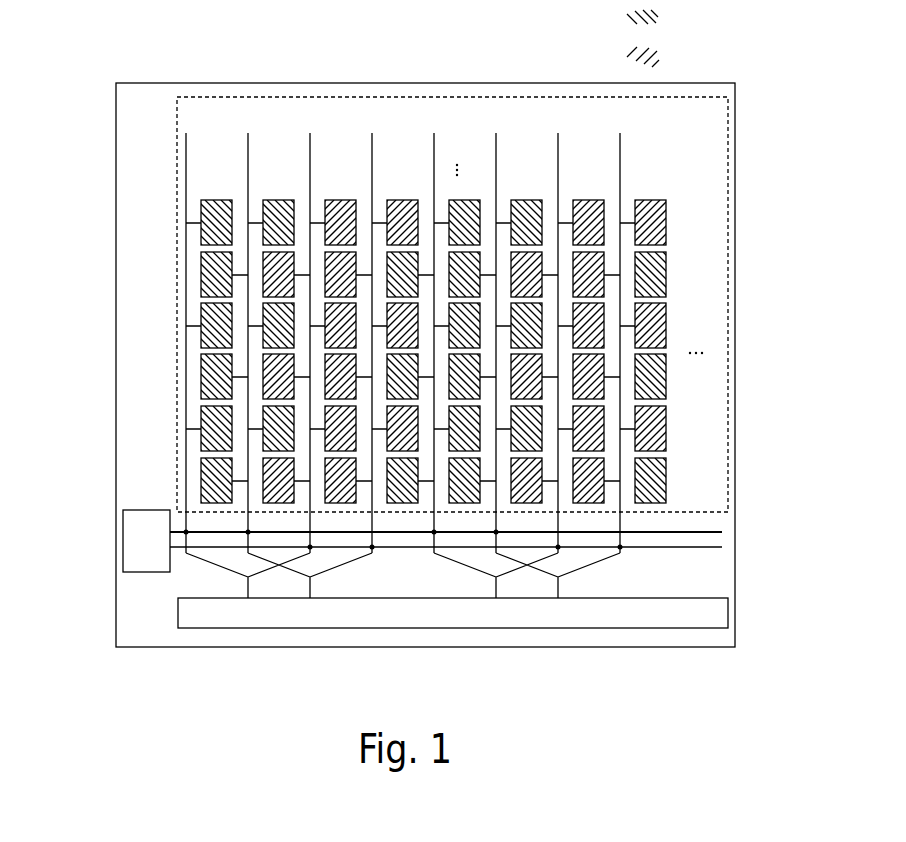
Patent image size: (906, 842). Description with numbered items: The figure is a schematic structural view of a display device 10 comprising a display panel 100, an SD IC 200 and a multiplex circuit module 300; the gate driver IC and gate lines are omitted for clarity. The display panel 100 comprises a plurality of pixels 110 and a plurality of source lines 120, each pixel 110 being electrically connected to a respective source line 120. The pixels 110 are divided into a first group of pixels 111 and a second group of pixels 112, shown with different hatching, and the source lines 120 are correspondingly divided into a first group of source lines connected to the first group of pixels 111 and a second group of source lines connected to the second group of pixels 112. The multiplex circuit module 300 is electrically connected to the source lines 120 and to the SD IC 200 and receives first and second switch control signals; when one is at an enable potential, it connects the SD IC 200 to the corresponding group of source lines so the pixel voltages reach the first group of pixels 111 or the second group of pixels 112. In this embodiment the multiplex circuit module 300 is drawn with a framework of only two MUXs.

The display device 10 is at (116, 460).
The display panel 100 is at (177, 304).
The pixels 110 is at (667, 223).
The first group of pixels 111 is at (678, 21).
The second group of pixels 112 is at (678, 57).
The source lines 120 is at (186, 157).
The SD IC 200 is at (178, 612).
The multiplex circuit module 300 is at (123, 540).